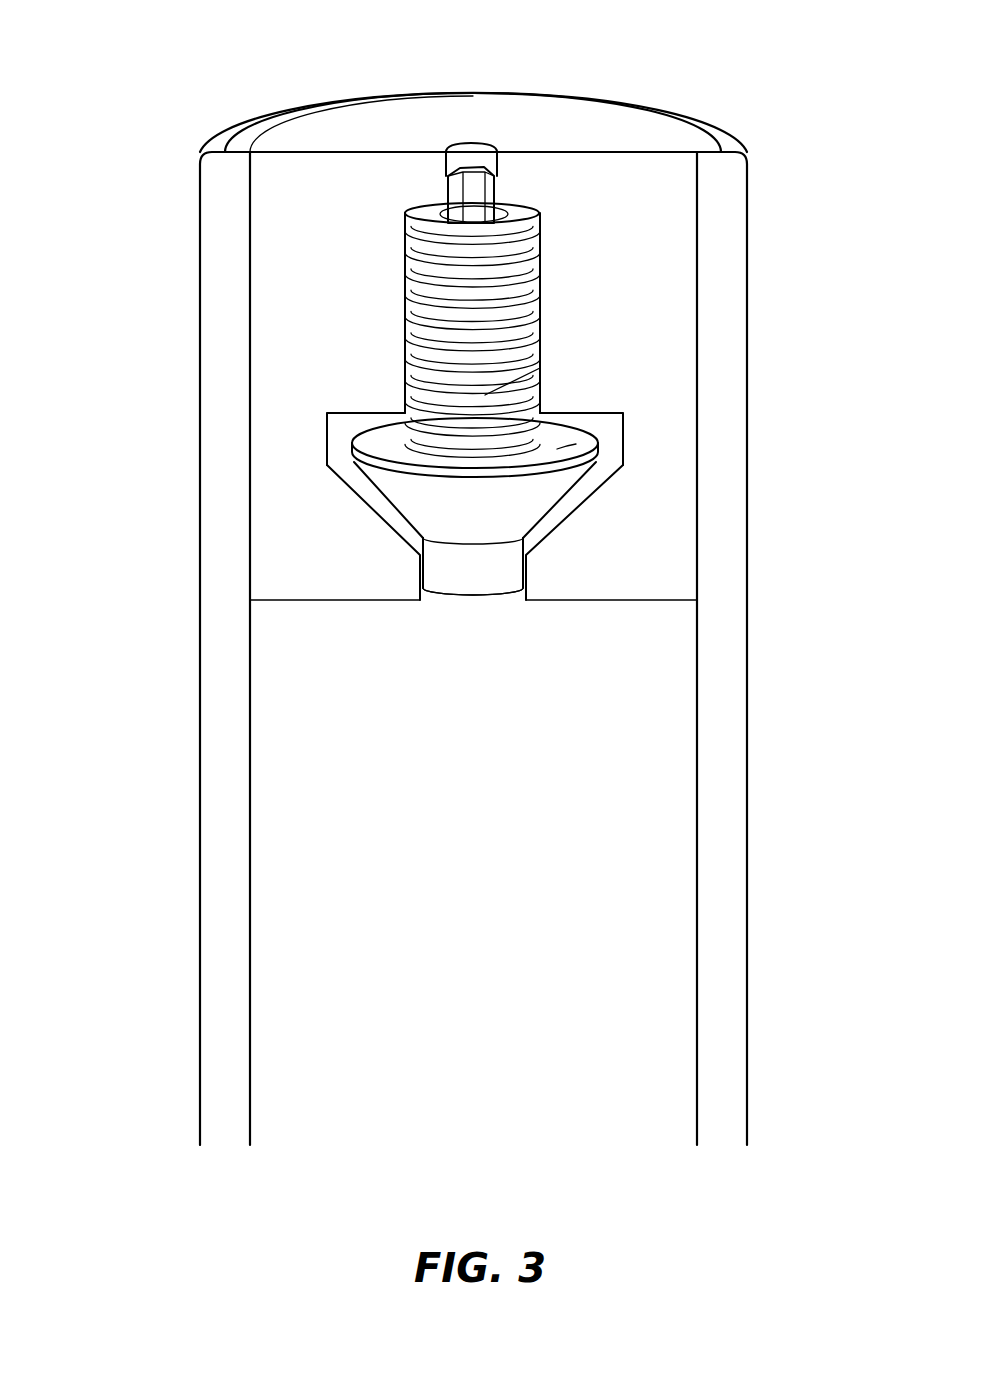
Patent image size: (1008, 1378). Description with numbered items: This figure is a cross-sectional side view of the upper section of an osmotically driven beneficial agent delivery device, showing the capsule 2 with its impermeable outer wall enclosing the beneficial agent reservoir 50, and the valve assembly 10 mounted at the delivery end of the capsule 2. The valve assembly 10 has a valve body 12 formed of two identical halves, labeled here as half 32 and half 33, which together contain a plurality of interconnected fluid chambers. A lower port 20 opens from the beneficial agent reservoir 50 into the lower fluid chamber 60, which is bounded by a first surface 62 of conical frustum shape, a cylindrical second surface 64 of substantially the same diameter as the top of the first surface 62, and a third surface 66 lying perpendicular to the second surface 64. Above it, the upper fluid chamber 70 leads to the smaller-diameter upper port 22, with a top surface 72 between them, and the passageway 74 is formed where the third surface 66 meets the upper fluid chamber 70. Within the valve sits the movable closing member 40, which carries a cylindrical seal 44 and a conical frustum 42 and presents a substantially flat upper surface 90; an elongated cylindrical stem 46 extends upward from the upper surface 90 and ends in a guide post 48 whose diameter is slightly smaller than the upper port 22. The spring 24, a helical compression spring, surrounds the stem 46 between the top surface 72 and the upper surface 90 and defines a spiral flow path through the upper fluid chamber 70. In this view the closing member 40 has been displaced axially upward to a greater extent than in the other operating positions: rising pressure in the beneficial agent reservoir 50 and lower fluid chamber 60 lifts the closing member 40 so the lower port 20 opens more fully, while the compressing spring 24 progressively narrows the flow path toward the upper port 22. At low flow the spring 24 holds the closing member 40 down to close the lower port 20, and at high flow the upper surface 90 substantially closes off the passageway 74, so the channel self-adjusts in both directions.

The capsule 2 is at (748, 858).
The valve assembly 10 is at (698, 152).
The valve body 12 is at (326, 288).
The lower port 20 is at (523, 582).
The upper port 22 is at (478, 168).
The spring 24 is at (540, 368).
The half of valve body 32 is at (680, 577).
The partition plate surface 33 is at (290, 573).
The movable closing member 40 is at (352, 478).
The conical frustum 42 is at (448, 515).
The cylindrical seal 44 is at (457, 560).
The elongated cylindrical stem 46 is at (440, 213).
The guide post 48 is at (457, 197).
The beneficial agent reservoir 50 is at (423, 920).
The lower fluid chamber 60 is at (627, 442).
The first surface 62 is at (365, 505).
The second surface 64 is at (326, 422).
The third surface 66 is at (540, 413).
The upper fluid chamber 70 is at (540, 293).
The top surface 72 is at (553, 152).
The passageway 74 is at (540, 410).
The upper surface 90 is at (557, 451).